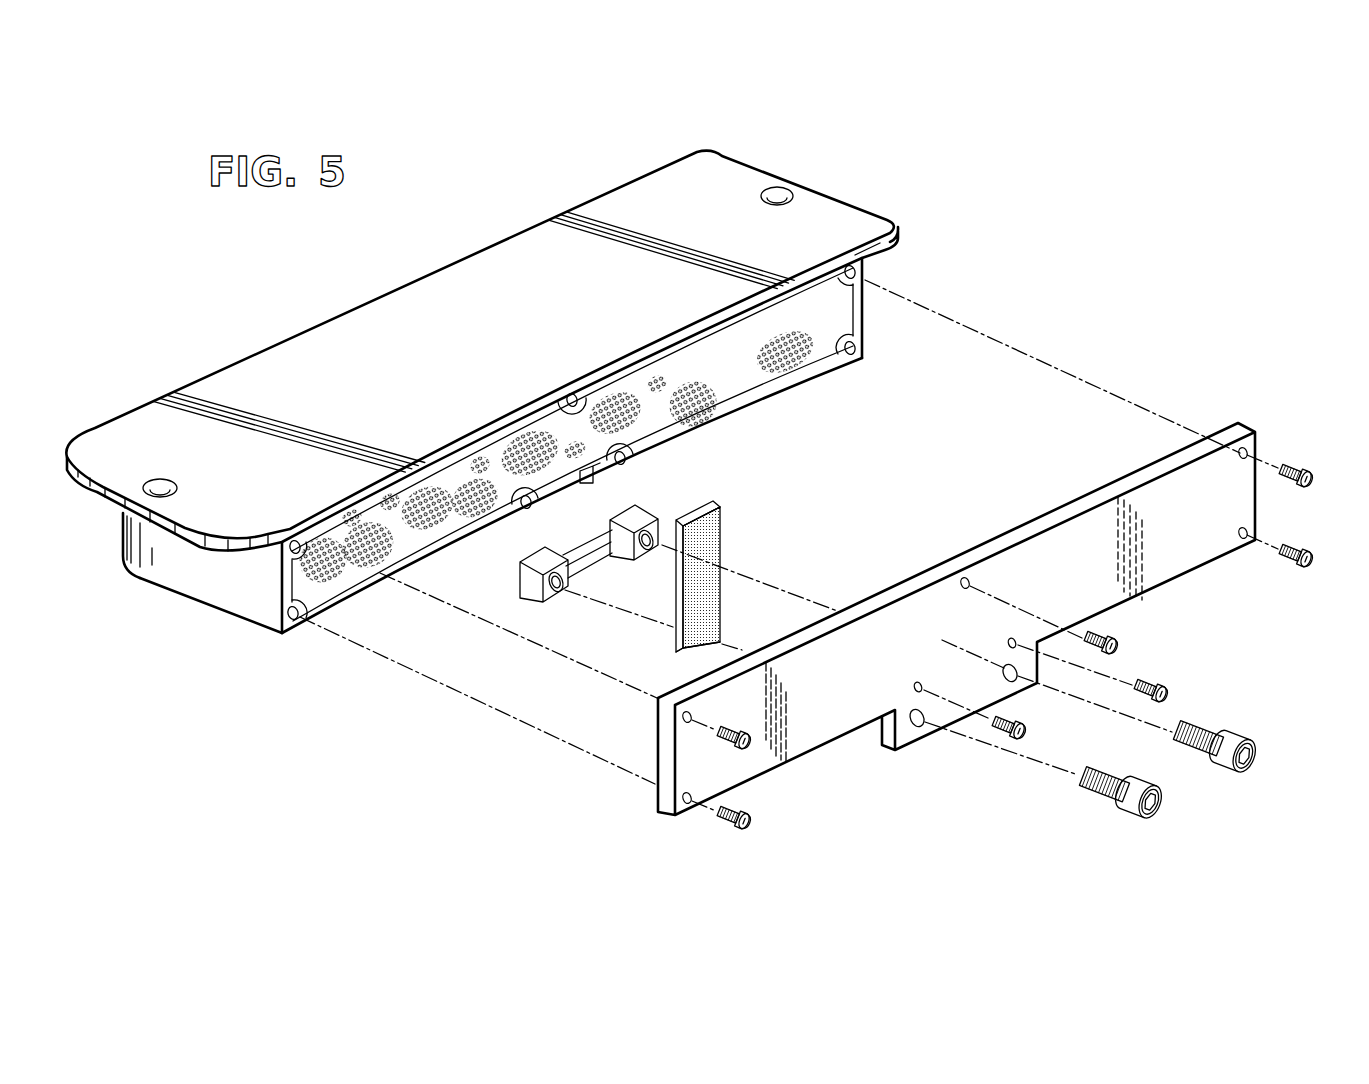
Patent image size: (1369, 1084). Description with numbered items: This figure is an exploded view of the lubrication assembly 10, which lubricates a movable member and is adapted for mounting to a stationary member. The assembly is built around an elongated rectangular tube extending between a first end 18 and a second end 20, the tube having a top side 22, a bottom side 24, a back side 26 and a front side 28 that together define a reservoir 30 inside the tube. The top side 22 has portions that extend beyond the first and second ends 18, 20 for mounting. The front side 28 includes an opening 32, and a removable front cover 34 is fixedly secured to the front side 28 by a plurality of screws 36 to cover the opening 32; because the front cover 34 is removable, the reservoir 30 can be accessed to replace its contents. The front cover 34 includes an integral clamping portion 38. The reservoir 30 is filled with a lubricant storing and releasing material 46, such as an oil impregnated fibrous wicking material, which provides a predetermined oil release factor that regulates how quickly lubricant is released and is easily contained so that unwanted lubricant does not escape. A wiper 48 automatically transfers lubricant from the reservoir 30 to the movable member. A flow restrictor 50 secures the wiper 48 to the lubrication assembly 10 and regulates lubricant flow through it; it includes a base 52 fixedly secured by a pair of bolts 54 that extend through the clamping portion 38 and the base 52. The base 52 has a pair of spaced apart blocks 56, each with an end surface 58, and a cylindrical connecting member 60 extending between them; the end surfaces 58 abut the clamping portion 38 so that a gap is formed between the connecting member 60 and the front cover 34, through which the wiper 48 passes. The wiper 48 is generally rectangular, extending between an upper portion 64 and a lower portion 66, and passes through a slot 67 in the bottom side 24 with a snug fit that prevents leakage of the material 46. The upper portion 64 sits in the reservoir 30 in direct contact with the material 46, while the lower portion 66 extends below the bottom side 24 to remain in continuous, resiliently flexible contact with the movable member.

The lubrication assembly 10 is at (825, 158).
The first end 18 is at (197, 582).
The second end 20 is at (866, 296).
The top side 22 is at (500, 256).
The bottom side 24 is at (227, 610).
The back side 26 is at (120, 533).
The front side 28 is at (360, 588).
The reservoir 30 is at (745, 385).
The opening 32 is at (812, 378).
The front cover 34 is at (1063, 508).
The screws 36 is at (1312, 560).
The clamping portion 38 is at (952, 718).
The lubricant storing and releasing material 46 is at (427, 515).
The wiper 48 is at (712, 537).
The flow restrictor 50 is at (803, 542).
The base 52 is at (652, 512).
The bolts 54 is at (1163, 796).
The blocks 56 is at (640, 507).
The end surface 58 is at (555, 596).
The connecting member 60 is at (593, 556).
The upper portion 64 is at (706, 507).
The lower portion 66 is at (703, 651).
The slot 67 is at (567, 482).